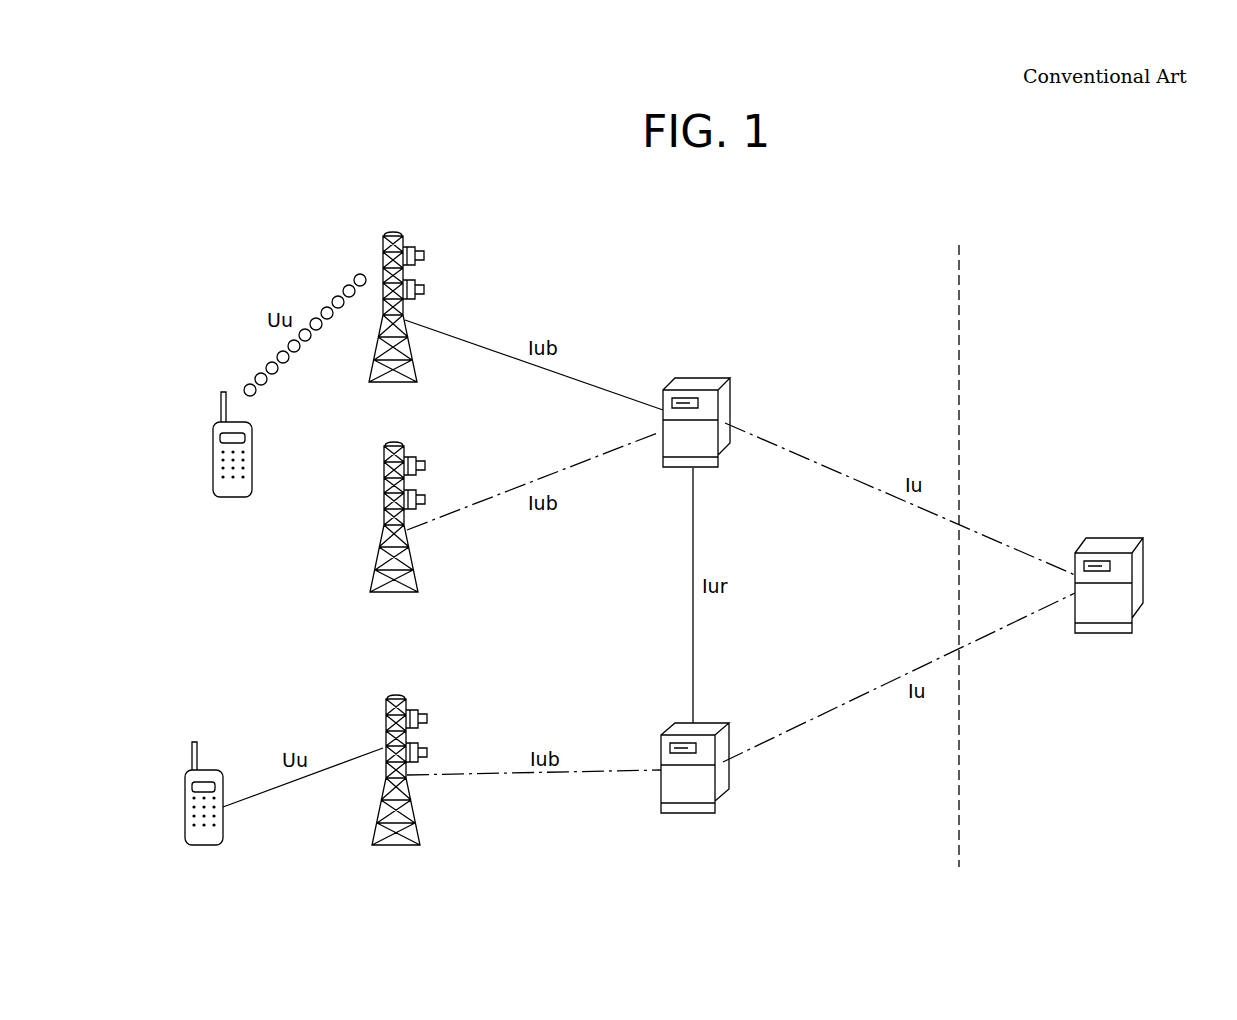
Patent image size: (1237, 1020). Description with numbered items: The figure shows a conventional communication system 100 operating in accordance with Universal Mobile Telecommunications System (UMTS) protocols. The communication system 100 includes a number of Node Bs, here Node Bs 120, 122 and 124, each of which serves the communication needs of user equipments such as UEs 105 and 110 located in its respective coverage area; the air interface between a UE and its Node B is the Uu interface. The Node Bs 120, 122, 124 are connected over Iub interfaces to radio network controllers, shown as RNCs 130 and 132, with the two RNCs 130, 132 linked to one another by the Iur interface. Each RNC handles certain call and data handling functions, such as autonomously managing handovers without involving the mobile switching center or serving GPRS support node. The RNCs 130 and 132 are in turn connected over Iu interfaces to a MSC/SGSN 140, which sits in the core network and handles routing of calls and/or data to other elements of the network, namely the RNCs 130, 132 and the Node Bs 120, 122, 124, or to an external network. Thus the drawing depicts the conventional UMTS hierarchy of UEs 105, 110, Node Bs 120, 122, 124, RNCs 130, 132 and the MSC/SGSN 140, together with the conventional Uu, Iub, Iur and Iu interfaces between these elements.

The communication system 100 is at (763, 213).
The UE 105 is at (252, 480).
The UE 110 is at (212, 768).
The Node B 120 is at (432, 266).
The Node B 122 is at (435, 478).
The Node B 124 is at (437, 730).
The RNC 130 is at (730, 395).
The RNC 132 is at (730, 732).
The MSC/SGSN 140 is at (1115, 538).